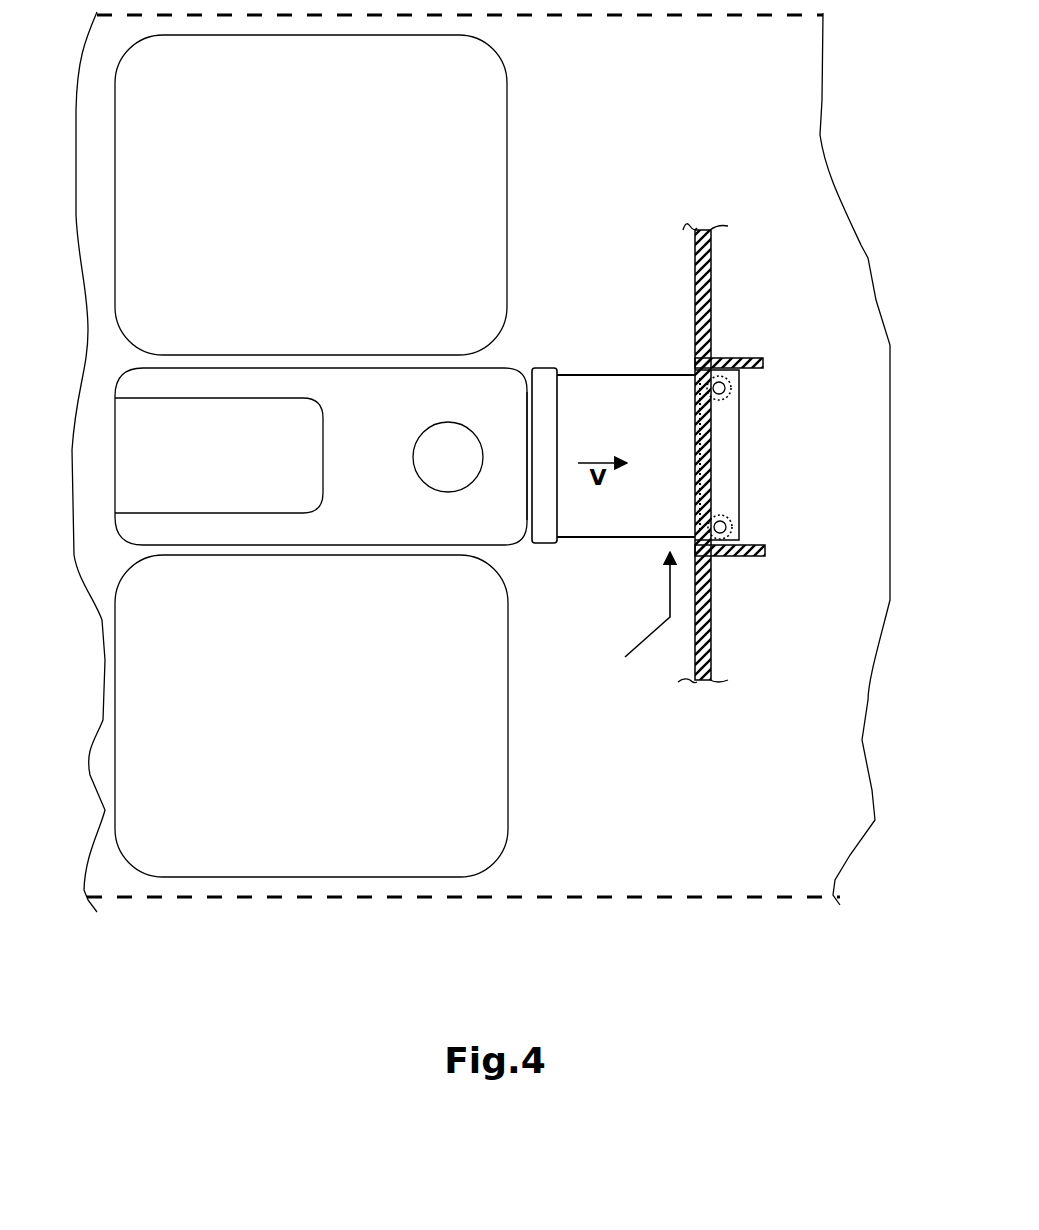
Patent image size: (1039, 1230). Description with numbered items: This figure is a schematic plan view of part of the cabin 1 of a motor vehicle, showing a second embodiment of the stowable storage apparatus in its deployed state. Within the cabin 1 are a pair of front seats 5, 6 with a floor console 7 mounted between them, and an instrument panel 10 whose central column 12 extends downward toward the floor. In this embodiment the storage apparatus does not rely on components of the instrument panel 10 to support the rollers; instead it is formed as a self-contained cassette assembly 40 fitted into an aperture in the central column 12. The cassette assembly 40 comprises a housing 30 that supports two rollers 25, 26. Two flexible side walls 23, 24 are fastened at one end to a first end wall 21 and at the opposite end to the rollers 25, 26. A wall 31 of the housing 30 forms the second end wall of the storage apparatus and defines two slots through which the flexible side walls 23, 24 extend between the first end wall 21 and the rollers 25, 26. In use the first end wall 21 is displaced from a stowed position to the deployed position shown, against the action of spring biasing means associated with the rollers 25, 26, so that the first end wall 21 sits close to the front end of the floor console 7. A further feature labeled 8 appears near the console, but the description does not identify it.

The cabin 1 is at (633, 822).
The front seat 5 is at (248, 205).
The front seat 6 is at (248, 717).
The floor console 7 is at (248, 460).
The junction edge 8 is at (527, 520).
The instrument panel 10 is at (724, 642).
The central column 12 is at (712, 288).
The first end wall 21 is at (540, 368).
The flexible side wall 23 is at (636, 375).
The flexible side wall 24 is at (640, 537).
The roller 25 is at (731, 398).
The roller 26 is at (731, 517).
The housing 30 is at (740, 455).
The wall 31 is at (701, 468).
The cassette assembly 40 is at (630, 618).